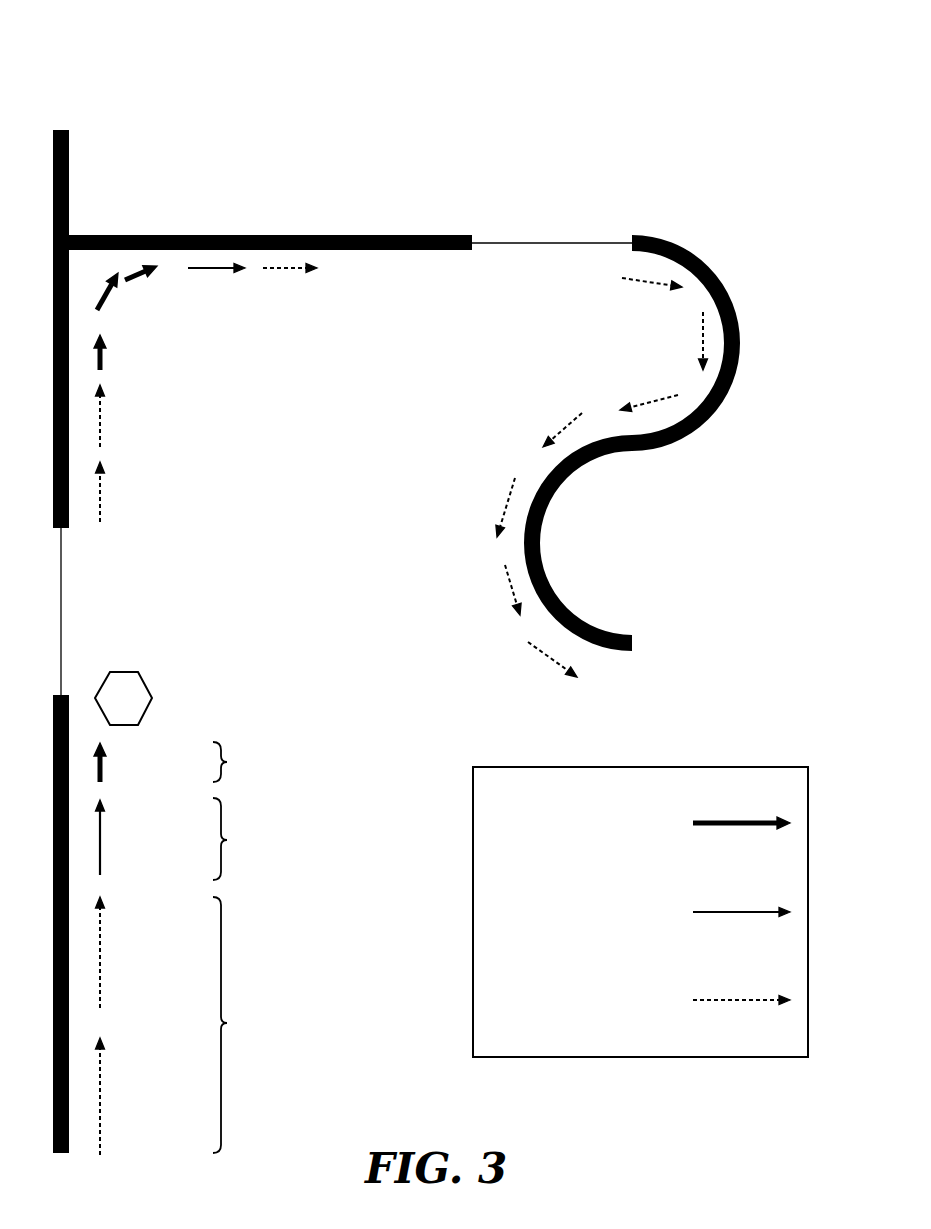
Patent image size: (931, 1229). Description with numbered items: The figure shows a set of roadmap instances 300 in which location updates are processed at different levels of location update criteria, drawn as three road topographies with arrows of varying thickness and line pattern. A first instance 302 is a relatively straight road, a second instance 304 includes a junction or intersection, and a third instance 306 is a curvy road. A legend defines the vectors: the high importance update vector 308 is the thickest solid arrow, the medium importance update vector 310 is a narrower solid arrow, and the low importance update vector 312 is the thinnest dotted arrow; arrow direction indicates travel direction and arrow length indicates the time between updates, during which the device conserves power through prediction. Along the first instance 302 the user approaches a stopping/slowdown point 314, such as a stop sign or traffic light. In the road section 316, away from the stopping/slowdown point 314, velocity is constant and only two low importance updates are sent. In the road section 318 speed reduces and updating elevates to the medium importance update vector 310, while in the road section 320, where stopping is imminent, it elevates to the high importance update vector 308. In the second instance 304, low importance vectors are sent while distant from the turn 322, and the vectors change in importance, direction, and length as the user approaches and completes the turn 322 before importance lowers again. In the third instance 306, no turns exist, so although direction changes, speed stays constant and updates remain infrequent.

The set of roadmap instances 300 is at (747, 41).
The first instance 302 is at (199, 604).
The second instance 304 is at (201, 152).
The third instance 306 is at (714, 198).
The high importance update vector 308 is at (108, 764).
The medium importance update vector 310 is at (103, 841).
The low importance update vector 312 is at (102, 949).
The stopping/slowdown point 314 is at (146, 687).
The road section 316 is at (227, 1023).
The road section 318 is at (227, 840).
The road section 320 is at (227, 762).
The turn 322 is at (86, 218).